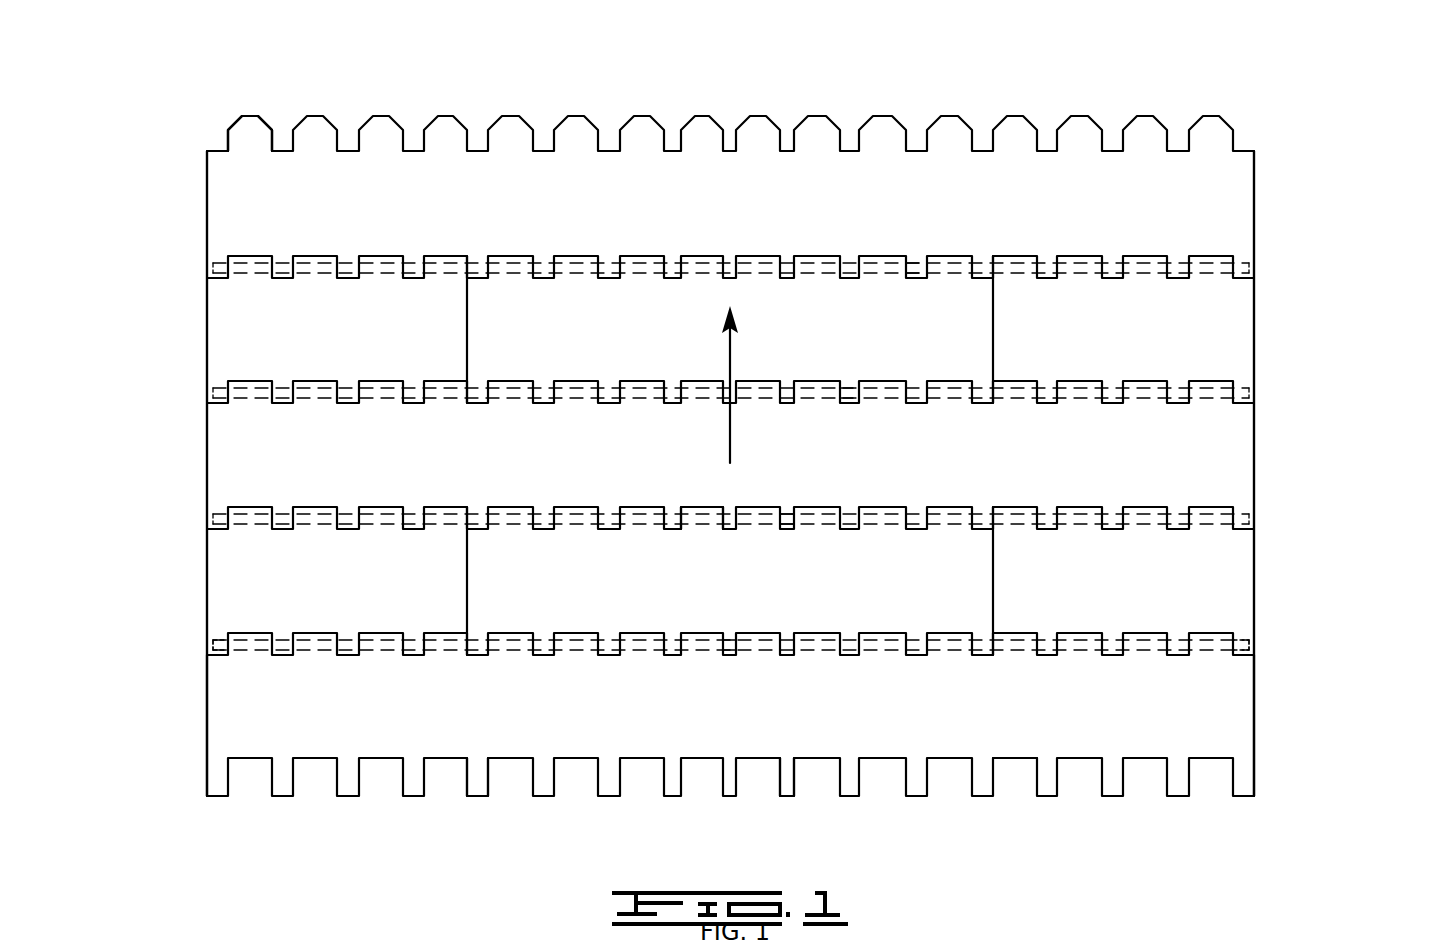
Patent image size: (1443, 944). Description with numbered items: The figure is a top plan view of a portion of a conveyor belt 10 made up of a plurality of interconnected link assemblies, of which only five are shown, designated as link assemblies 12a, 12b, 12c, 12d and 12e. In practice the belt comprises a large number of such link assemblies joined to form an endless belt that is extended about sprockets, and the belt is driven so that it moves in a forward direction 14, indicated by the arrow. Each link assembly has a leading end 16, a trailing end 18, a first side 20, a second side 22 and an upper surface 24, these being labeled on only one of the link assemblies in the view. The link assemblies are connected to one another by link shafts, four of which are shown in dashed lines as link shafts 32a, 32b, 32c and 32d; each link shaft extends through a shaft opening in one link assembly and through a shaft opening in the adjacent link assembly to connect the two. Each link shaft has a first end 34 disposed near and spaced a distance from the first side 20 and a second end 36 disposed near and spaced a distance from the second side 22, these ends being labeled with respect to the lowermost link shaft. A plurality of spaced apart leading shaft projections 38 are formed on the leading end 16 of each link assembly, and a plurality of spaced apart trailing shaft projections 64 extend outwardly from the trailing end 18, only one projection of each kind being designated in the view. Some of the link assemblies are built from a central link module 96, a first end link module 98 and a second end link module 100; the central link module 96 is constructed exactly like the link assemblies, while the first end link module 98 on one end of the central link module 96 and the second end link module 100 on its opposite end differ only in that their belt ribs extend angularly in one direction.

The conveyor belt 10 is at (750, 84).
The link assembly 12a is at (1255, 715).
The link assembly 12b is at (1255, 588).
The link assembly 12c is at (1255, 461).
The link assembly 12d is at (1255, 333).
The link assembly 12e is at (1255, 207).
The forward direction 14 is at (728, 369).
The leading end 16 is at (705, 505).
The trailing end 18 is at (787, 797).
The first side 20 is at (207, 738).
The second side 22 is at (1257, 742).
The upper surface 24 is at (1019, 717).
The link shaft 32a is at (729, 636).
The link shaft 32b is at (788, 508).
The link shaft 32c is at (848, 383).
The link shaft 32d is at (915, 256).
The first end 34 is at (220, 637).
The second end 36 is at (1243, 637).
The leading shaft projection 38 is at (253, 116).
The trailing shaft projection 64 is at (478, 797).
The central link module 96 is at (621, 592).
The first end link module 98 is at (341, 559).
The second end link module 100 is at (1119, 556).